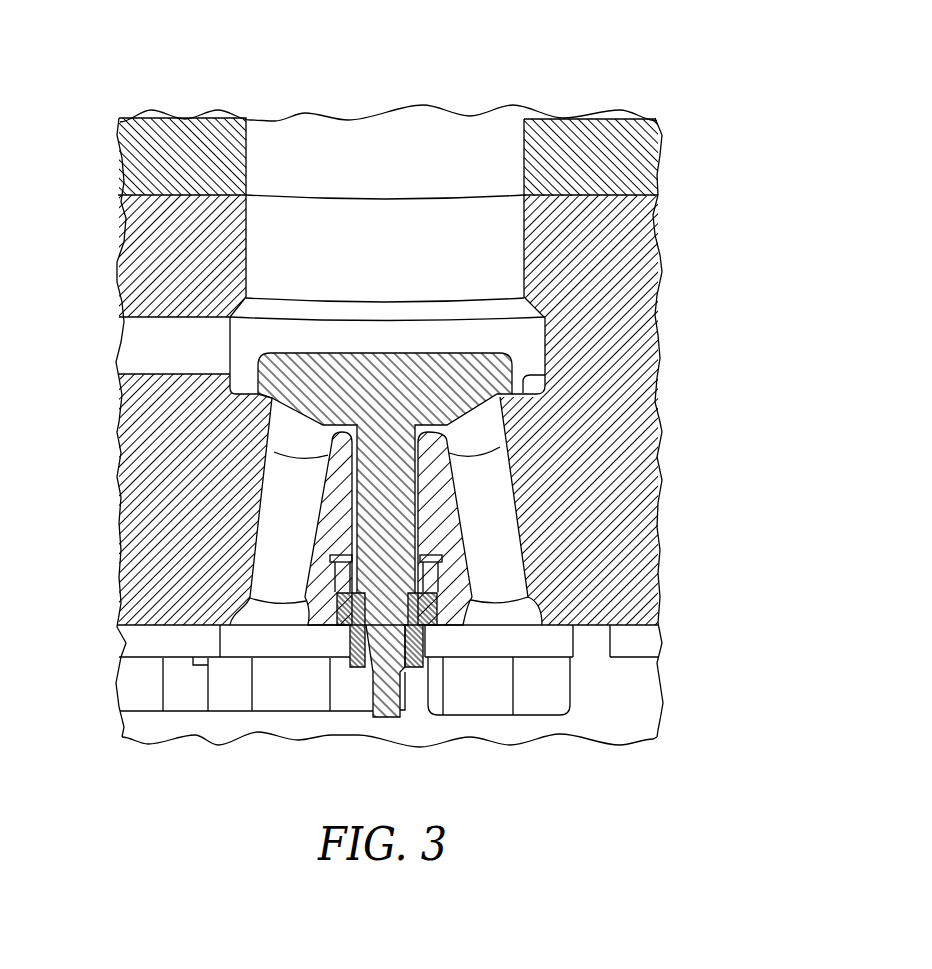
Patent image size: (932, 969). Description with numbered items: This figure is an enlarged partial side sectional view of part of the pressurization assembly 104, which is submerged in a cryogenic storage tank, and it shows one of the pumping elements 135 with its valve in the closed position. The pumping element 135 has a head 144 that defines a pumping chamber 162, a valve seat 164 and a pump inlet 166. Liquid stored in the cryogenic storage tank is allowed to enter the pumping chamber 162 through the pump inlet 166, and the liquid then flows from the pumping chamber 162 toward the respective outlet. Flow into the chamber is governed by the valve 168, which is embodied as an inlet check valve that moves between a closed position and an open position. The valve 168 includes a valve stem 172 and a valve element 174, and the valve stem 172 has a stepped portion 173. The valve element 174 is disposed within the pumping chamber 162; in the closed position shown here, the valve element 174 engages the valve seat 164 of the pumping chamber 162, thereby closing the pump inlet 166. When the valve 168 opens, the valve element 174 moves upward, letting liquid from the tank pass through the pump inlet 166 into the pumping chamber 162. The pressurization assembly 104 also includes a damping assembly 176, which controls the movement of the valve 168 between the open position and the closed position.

The pressurization assembly 104 is at (818, 90).
The pumping element 135 is at (685, 193).
The pumping chamber 162 is at (472, 270).
The valve 168 is at (515, 346).
The valve element 174 is at (512, 373).
The valve seat 164 is at (545, 382).
The head 144 is at (643, 445).
The pump inlet 166 is at (505, 480).
The valve stem 172 is at (460, 498).
The stepped portion 173 is at (444, 555).
The damping assembly 176 is at (453, 578).